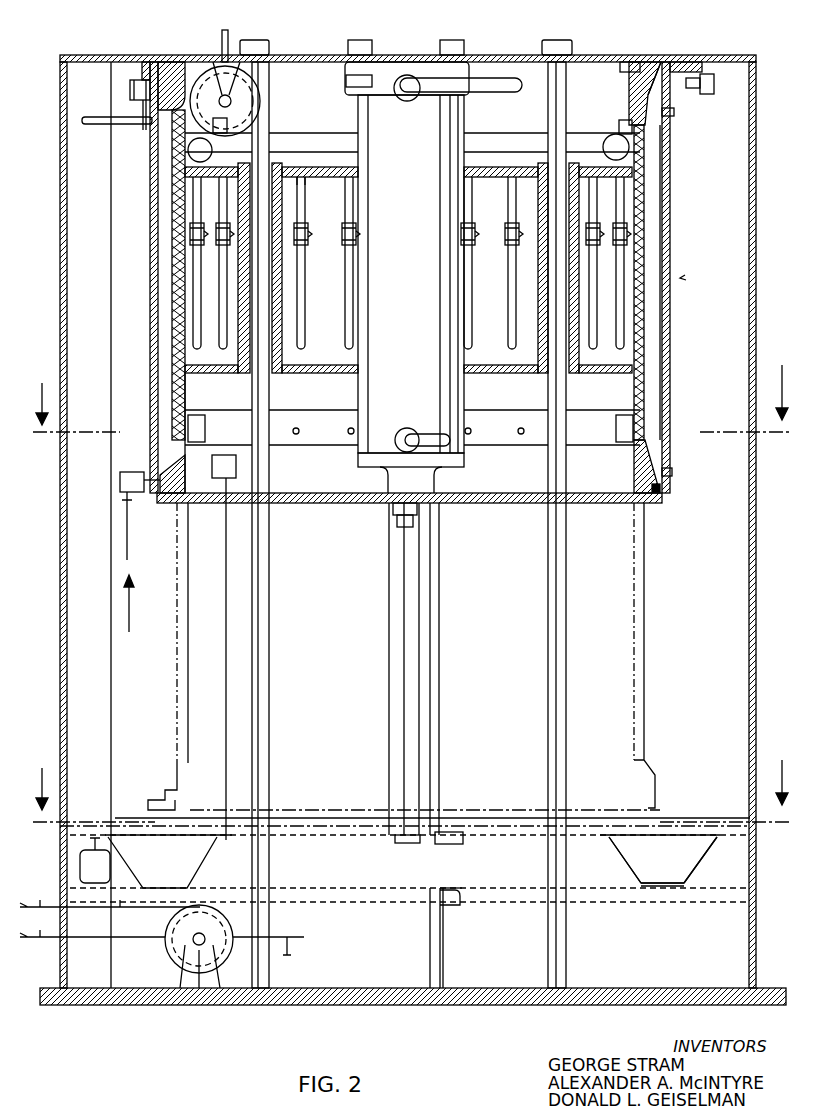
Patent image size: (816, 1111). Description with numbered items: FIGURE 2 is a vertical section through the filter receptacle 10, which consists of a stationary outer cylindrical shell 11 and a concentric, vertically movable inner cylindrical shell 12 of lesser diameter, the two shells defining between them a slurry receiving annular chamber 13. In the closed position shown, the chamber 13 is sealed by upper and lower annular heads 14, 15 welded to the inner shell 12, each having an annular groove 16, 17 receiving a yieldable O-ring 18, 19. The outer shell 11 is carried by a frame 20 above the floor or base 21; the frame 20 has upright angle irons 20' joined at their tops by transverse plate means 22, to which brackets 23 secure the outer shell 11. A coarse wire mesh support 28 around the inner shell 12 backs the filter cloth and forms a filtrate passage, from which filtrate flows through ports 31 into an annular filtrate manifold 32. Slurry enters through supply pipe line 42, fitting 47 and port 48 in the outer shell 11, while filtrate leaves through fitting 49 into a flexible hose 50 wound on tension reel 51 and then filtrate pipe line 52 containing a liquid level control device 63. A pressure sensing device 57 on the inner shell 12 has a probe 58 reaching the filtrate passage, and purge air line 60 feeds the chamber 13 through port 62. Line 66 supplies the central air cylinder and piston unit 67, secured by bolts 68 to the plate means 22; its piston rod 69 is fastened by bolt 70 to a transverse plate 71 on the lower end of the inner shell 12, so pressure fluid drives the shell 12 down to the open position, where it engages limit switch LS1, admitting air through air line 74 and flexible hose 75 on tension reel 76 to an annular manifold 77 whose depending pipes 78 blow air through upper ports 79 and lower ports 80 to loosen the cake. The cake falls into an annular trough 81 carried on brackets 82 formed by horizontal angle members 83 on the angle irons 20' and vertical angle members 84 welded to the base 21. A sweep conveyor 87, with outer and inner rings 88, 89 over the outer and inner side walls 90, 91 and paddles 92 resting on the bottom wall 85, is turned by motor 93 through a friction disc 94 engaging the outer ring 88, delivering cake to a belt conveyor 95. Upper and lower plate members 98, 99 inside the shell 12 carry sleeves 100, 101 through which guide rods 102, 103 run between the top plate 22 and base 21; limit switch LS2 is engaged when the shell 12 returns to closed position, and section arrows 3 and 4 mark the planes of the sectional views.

The filter receptacle 10 is at (682, 279).
The outer cylindrical shell 11 is at (670, 230).
The inner cylindrical shell 12 is at (630, 90).
The slurry receiving annular chamber 13 is at (652, 170).
The upper annular head 14 is at (654, 72).
The lower annular head 15 is at (668, 470).
The annular groove 16 is at (684, 61).
The annular groove 17 is at (657, 495).
The O-ring 18 is at (695, 82).
The O-ring 19 is at (660, 487).
The frame 20 is at (427, 525).
The upright angle irons 20' is at (384, 525).
The floor or base 21 is at (355, 1005).
The transverse plate means 22 is at (298, 56).
The brackets 23 is at (140, 77).
The coarse wire mesh support 28 is at (645, 265).
The ports 31 is at (297, 428).
The annular filtrate manifold 32 is at (475, 418).
The slurry supply pipe line 42 is at (130, 530).
The fitting 47 is at (122, 474).
The port 48 is at (162, 470).
The fitting 49 is at (240, 465).
The flexible hose 50 is at (232, 660).
The tension reel 51 is at (185, 975).
The filtrate pipe line 52 is at (290, 936).
The pressure sensing device 57 is at (614, 130).
The probe 58 is at (640, 135).
The purge air line 60 is at (95, 120).
The port 62 is at (150, 125).
The liquid level control device 63 is at (290, 950).
The line 66 is at (488, 78).
The air cylinder and piston unit 67 is at (435, 118).
The bolts 68 is at (436, 45).
The piston rod 69 is at (398, 503).
The bolt 70 is at (428, 505).
The transverse plate 71 is at (522, 505).
The air line 74 is at (224, 38).
The flexible hose 75 is at (200, 85).
The tension reel 76 is at (240, 120).
The annular manifold 77 is at (300, 147).
The vertically extending pipes 78 is at (305, 278).
The upper ports 79 is at (178, 240).
The lower ports 80 is at (178, 352).
The annular trough 81 is at (696, 870).
The brackets 82 is at (444, 905).
The angle members 83 is at (450, 893).
The vertical angle members 84 is at (444, 945).
The bottom wall 85 is at (660, 888).
The sweep conveyor 87 is at (660, 800).
The outer ring 88 is at (115, 835).
The inner ring 89 is at (215, 830).
The outer side wall 90 is at (688, 882).
The inner side wall 91 is at (626, 870).
The paddles 92 is at (690, 852).
The motor 93 is at (85, 870).
The rotatable disc 94 is at (100, 835).
The belt conveyor 95 is at (50, 940).
The upper horizontal plate member 98 is at (330, 178).
The lower horizontal plate member 99 is at (332, 375).
The sleeve 100 is at (278, 376).
The sleeve 101 is at (580, 375).
The guide rod 102 is at (270, 590).
The guide rod 103 is at (548, 595).
The limit switch LS1 is at (165, 800).
The limit switch LS2 is at (628, 60).
The section line 3- 3 is at (411, 779).
The section line 4- 4 is at (411, 388).